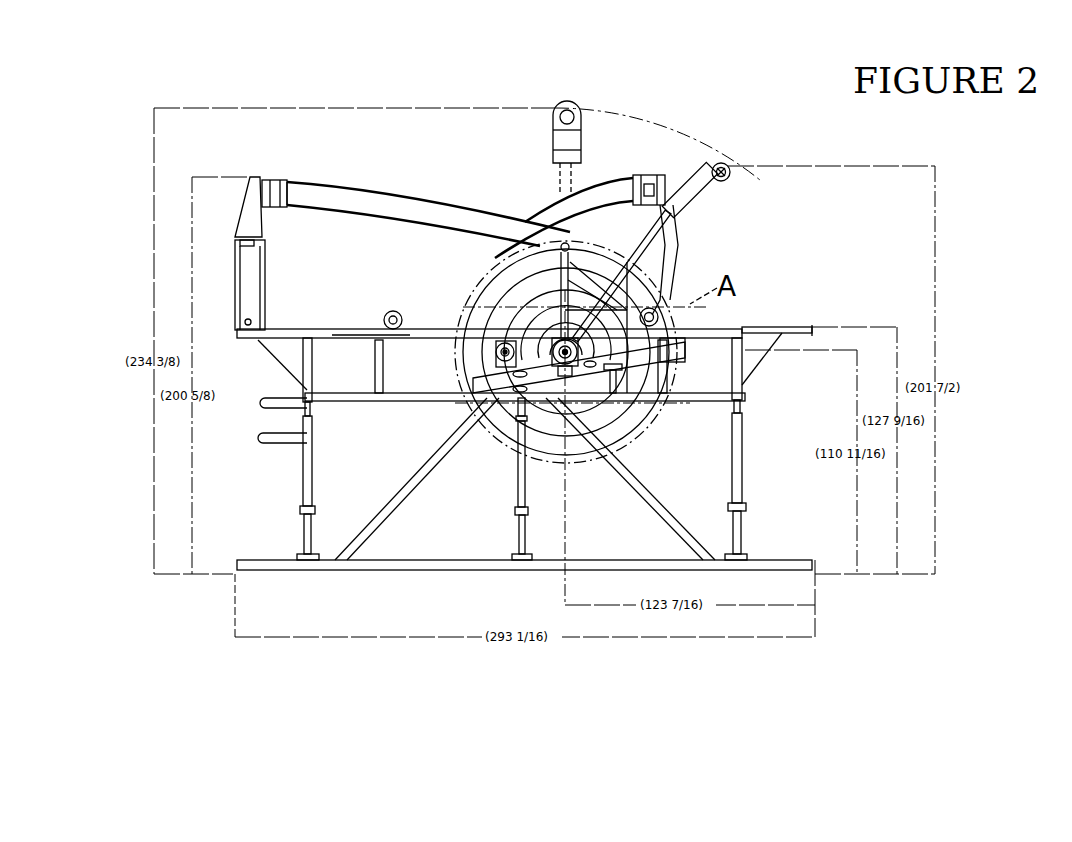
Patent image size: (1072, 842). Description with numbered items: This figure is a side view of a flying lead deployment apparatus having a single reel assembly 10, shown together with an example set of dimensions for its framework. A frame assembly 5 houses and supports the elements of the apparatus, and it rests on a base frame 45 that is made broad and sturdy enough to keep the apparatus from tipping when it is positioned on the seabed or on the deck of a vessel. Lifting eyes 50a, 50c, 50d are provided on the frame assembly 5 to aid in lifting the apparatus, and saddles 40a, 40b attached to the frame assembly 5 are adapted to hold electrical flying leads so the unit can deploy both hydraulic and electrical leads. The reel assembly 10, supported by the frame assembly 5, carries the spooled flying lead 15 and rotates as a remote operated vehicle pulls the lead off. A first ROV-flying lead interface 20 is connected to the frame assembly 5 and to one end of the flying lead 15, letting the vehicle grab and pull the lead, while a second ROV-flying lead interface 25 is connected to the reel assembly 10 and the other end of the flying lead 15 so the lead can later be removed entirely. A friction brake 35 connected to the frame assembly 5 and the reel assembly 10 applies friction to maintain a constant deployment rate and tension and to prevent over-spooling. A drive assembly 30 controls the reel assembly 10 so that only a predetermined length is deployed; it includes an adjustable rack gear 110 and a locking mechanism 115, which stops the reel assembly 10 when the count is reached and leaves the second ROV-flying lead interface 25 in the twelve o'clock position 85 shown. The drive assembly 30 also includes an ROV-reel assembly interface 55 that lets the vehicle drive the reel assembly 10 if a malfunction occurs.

The frame assembly 5 is at (742, 475).
The reel assembly 10 is at (508, 388).
The flying lead 15 is at (612, 178).
The first ROV-flying lead interface 20 is at (272, 185).
The second ROV-flying lead interface 25 is at (667, 177).
The drive assembly 30 is at (577, 373).
The friction brake 35 is at (505, 357).
The saddle 40a is at (262, 403).
The saddle 40b is at (262, 440).
The base frame 45 is at (362, 572).
The lifting eye 50a is at (393, 311).
The lifting eye 50c is at (658, 313).
The lifting eye 50d is at (730, 167).
The ROV-reel assembly interface 55 is at (565, 345).
The twelve o'clock position 85 is at (651, 158).
The adjustable rack gear 110 is at (543, 373).
The locking mechanism 115 is at (745, 340).